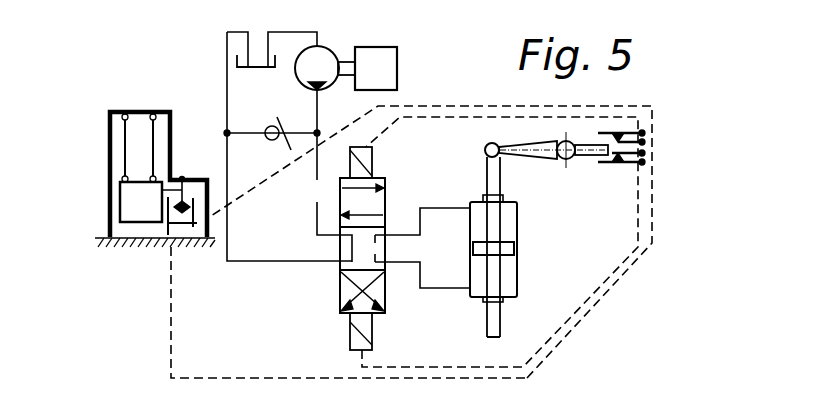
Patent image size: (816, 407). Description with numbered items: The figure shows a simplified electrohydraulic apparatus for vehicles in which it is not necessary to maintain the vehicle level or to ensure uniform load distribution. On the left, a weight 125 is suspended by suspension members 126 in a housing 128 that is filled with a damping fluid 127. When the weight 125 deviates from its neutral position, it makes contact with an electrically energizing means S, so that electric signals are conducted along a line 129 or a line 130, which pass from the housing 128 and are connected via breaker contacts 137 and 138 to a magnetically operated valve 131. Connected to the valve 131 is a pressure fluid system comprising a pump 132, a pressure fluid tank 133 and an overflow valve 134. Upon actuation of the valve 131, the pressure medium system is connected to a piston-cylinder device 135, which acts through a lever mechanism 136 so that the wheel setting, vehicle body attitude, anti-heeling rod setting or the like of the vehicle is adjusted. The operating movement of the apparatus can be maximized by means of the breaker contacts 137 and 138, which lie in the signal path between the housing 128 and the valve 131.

The weight 125 is at (137, 213).
The rods 126 is at (152, 130).
The damping fluid 127 is at (116, 145).
The housing 128 is at (108, 168).
The line 129 is at (255, 190).
The line 130 is at (173, 306).
The magnetically operated valve 131 is at (380, 312).
The pump 132 is at (328, 48).
The pressure fluid tank 133 is at (242, 70).
The overflow valve 134 is at (294, 124).
The piston-cylinder device 135 is at (517, 228).
The lever mechanism 136 is at (522, 157).
The breaker contact 137 is at (645, 137).
The breaker contact 138 is at (645, 157).
The electrically energizing means S is at (212, 177).